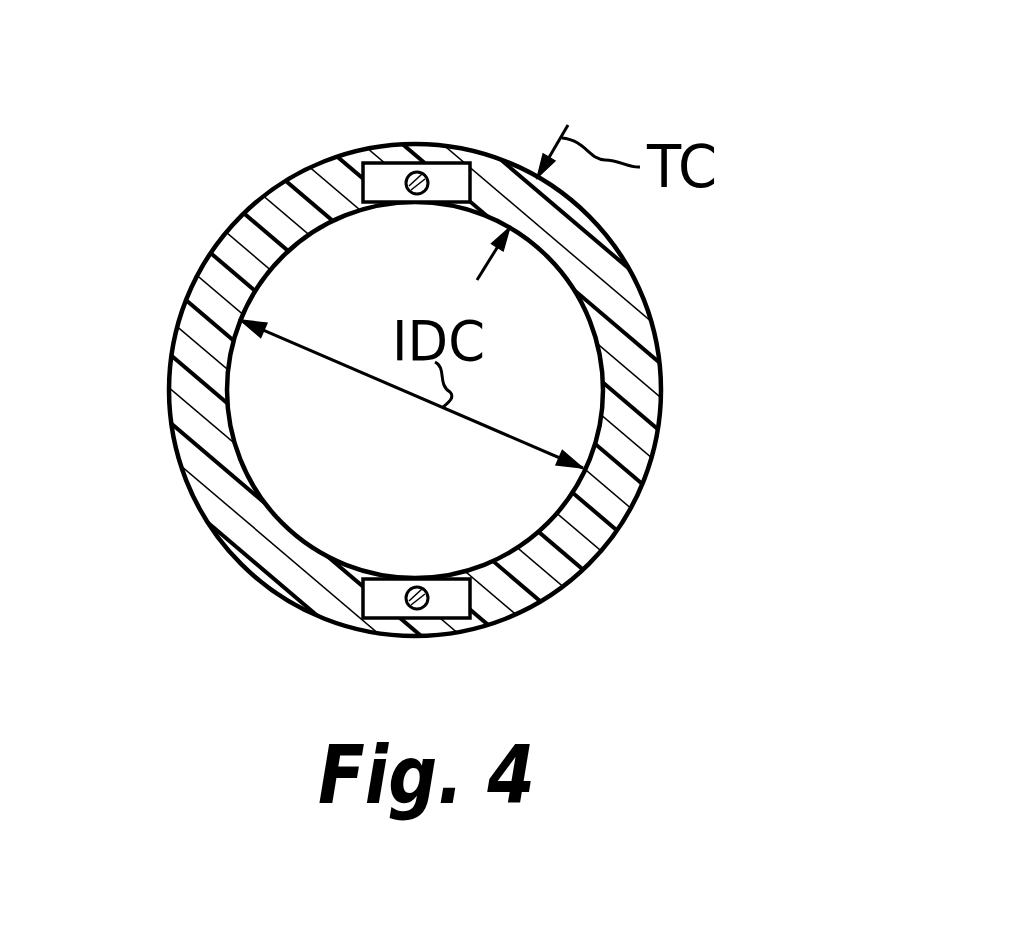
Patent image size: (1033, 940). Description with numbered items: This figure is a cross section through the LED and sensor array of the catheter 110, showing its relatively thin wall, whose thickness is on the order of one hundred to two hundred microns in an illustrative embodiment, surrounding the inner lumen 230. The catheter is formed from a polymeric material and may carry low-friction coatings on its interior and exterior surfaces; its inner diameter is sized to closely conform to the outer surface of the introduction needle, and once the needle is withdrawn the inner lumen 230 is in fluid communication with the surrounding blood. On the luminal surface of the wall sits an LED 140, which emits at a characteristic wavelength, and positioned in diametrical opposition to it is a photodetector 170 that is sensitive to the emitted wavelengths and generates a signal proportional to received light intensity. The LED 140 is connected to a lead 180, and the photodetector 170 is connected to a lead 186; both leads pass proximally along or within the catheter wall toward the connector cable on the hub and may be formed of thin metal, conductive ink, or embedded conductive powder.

The catheter 110 is at (477, 470).
The LED 140 is at (498, 113).
The photodetector 170 is at (526, 631).
The lead 180 is at (405, 178).
The lead 186 is at (407, 603).
The inner lumen 230 is at (357, 287).